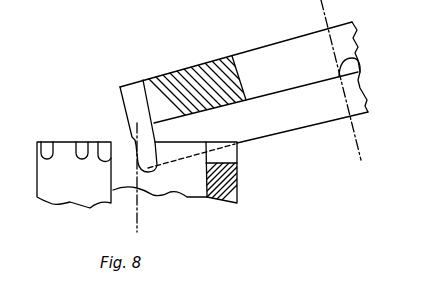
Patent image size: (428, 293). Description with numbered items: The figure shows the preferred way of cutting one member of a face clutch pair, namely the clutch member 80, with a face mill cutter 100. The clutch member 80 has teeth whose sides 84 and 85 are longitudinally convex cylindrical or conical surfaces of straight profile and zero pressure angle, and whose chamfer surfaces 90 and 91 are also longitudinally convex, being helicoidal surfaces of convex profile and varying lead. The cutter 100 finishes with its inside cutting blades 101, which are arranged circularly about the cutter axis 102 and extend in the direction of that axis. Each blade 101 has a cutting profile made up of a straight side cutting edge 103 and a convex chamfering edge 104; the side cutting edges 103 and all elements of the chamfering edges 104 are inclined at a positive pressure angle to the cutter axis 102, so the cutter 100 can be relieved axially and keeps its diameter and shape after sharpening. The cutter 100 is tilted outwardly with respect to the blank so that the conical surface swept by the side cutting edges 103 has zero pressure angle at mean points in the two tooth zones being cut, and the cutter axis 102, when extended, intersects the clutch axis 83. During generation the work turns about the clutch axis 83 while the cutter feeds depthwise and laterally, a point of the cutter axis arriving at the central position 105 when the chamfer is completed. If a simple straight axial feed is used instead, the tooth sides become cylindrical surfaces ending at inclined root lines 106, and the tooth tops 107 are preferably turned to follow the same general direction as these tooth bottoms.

The clutch member 80 is at (44, 186).
The clutch axis 83 is at (137, 218).
The tooth side 84 is at (101, 158).
The tooth side 85 is at (72, 155).
The chamfer surface 90 is at (97, 143).
The chamfer surface 91 is at (73, 143).
The face mill cutter 100 is at (197, 72).
The cutting blade 101 is at (128, 92).
The cutter axis 102 is at (362, 60).
The side cutting edge 103 is at (160, 150).
The chamfering edge 104 is at (148, 168).
The central position of cutter axis point 105 is at (364, 153).
The inclined root line 106 is at (222, 153).
The tooth top 107 is at (213, 142).